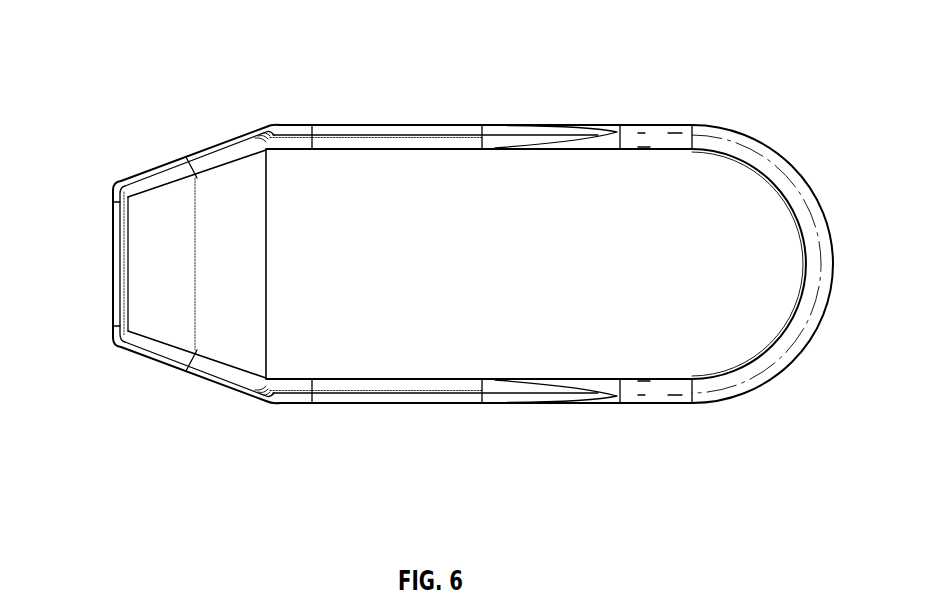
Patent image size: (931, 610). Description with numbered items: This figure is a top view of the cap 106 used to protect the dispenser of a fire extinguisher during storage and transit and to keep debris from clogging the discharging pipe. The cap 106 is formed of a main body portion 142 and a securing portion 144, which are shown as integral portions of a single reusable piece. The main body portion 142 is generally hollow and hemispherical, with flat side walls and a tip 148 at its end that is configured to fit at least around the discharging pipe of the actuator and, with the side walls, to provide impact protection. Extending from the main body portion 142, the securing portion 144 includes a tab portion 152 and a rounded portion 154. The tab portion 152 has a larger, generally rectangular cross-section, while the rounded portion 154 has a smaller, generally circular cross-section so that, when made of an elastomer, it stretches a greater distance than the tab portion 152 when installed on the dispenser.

The cap 106 is at (135, 67).
The main body portion 142 is at (158, 127).
The securing portion 144 is at (582, 95).
The tip 148 is at (113, 263).
The tab portion 152 is at (405, 413).
The rounded portion 154 is at (725, 408).